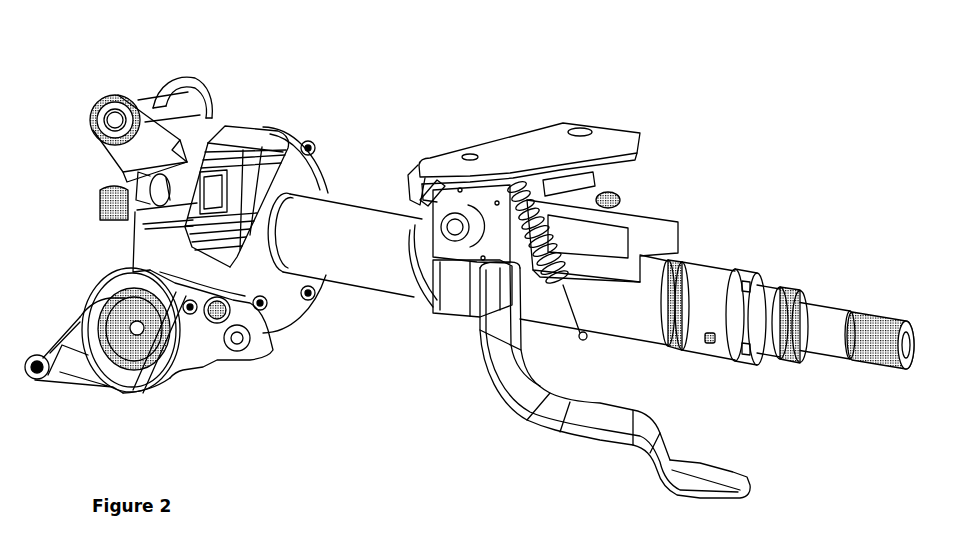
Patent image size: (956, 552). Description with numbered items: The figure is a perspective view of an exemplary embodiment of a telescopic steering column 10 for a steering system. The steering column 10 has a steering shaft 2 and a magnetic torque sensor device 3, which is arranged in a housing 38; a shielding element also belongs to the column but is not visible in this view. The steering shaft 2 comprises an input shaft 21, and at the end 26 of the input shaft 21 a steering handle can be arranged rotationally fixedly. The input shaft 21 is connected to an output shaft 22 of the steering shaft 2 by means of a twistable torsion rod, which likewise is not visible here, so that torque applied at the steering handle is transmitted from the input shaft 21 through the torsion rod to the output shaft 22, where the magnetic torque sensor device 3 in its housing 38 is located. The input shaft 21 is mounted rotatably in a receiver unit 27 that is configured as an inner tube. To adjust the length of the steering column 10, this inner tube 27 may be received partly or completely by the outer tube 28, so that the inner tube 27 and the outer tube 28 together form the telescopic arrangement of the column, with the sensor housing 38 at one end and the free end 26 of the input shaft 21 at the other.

The telescopic steering column 10 is at (469, 262).
The steering shaft 2 is at (407, 150).
The magnetic torque sensor device 3 is at (176, 219).
The housing 38 is at (260, 133).
The output shaft 22 is at (112, 218).
The receiver unit 27 is at (327, 253).
The outer tube 28 is at (637, 328).
The input shaft 21 is at (825, 317).
The end 26 is at (877, 310).